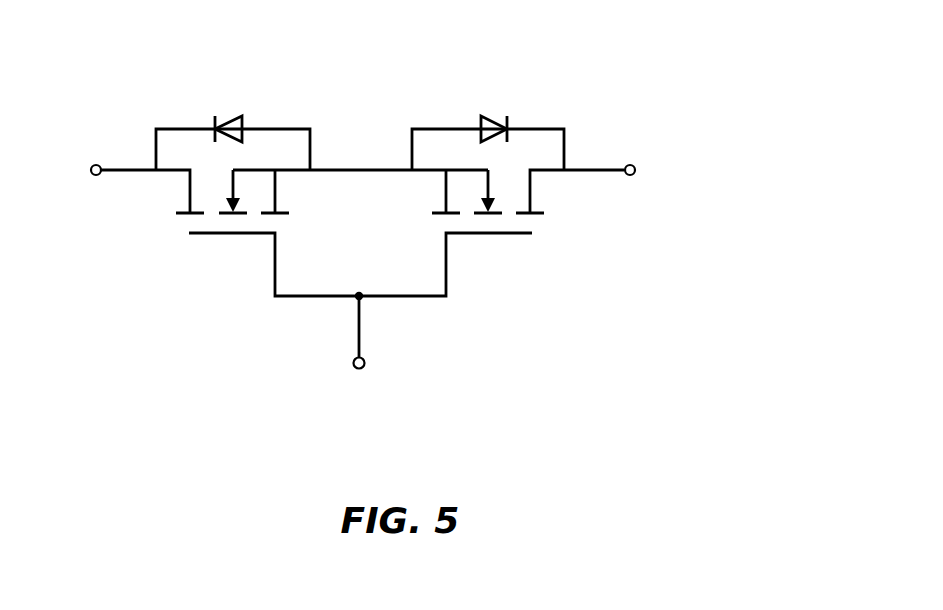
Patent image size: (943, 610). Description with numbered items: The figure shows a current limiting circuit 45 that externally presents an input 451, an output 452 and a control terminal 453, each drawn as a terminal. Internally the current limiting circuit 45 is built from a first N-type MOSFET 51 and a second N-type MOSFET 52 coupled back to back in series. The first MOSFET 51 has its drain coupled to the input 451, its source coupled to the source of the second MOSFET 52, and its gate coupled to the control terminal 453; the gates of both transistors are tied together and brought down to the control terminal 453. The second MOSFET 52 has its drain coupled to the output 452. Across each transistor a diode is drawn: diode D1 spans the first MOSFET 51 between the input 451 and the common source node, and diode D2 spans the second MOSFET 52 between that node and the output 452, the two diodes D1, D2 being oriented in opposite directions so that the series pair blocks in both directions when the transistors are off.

The current limiting circuit 45 is at (752, 127).
The first N-type MOSFET 51 is at (268, 100).
The second N-type MOSFET 52 is at (514, 98).
The first diode D1 is at (229, 115).
The second diode D2 is at (480, 114).
The input 451 is at (94, 164).
The output 452 is at (631, 177).
The control terminal 453 is at (363, 368).